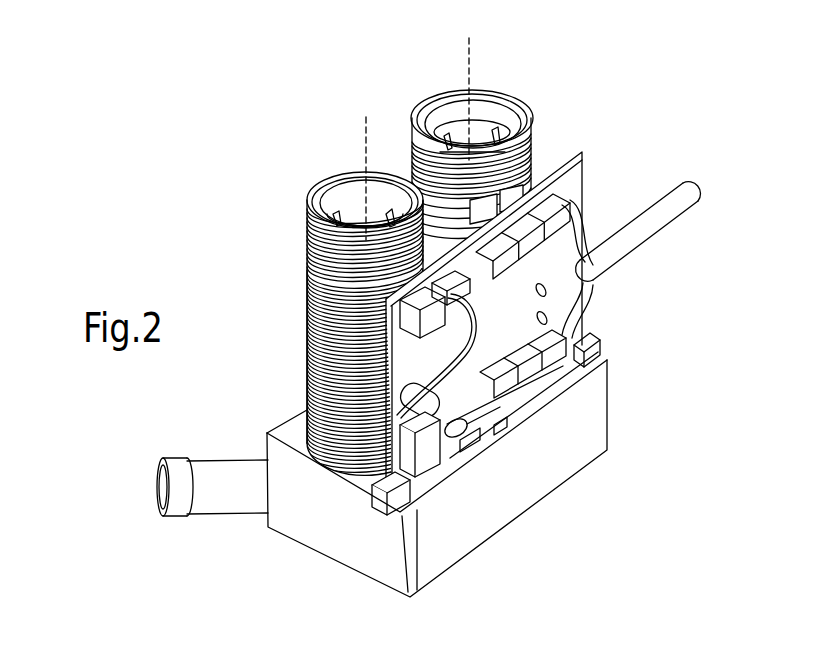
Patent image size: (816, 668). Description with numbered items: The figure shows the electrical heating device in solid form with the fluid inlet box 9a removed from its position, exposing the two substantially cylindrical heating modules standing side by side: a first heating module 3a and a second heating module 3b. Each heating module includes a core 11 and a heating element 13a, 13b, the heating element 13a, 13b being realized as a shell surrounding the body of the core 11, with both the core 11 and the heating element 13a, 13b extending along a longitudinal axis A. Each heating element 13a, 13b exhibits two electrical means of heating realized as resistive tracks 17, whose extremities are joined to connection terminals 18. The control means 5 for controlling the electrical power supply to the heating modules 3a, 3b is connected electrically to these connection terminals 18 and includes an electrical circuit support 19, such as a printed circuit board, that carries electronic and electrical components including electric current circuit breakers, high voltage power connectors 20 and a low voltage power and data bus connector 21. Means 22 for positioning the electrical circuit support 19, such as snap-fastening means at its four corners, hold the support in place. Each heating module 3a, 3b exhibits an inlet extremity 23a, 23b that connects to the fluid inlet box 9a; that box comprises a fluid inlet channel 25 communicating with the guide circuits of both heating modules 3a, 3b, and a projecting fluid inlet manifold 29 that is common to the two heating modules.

The first heating module 3a is at (290, 217).
The second heating module 3b is at (538, 98).
The control means 5 is at (641, 268).
The fluid inlet box 9a is at (562, 458).
The core 11 is at (338, 172).
The heating element 13a is at (310, 257).
The heating element 13b is at (462, 195).
The heating resistor 17 is at (307, 387).
The connection terminals 18 is at (307, 232).
The electrical circuit support 19 is at (570, 190).
The high voltage power connectors 20 is at (498, 268).
The low voltage power and data bus connector 21 is at (381, 280).
The positioning means 22 is at (600, 345).
The inlet extremity 23a is at (307, 190).
The inlet extremity 23b is at (409, 110).
The fluid inlet channel 25 is at (160, 486).
The fluid inlet manifold 29 is at (175, 512).
The longitudinal axis A is at (416, 125).